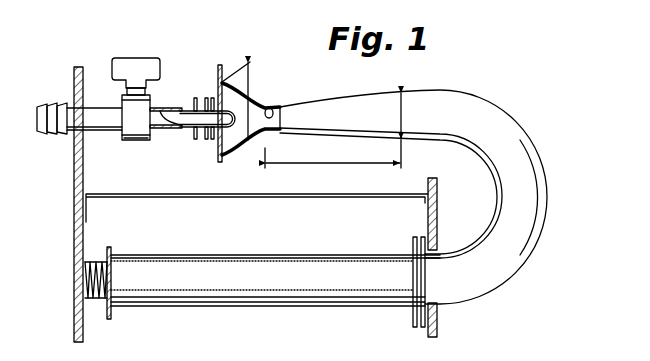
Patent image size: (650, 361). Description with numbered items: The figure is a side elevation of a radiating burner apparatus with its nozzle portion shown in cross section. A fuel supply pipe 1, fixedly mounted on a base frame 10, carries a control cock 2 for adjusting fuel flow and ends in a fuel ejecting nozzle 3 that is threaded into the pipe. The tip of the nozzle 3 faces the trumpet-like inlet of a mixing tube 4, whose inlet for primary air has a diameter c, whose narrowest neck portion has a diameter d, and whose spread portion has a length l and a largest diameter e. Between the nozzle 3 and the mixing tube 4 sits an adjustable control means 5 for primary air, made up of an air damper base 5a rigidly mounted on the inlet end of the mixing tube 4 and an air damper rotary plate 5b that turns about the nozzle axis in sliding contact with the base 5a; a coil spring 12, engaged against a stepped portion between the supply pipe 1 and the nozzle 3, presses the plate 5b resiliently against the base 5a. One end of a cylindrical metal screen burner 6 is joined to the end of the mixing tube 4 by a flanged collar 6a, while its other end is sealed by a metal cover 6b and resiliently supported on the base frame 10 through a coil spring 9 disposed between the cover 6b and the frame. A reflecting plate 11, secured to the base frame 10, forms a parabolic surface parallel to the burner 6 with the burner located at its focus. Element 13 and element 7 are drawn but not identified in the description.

The fuel supply pipe 1 is at (99, 114).
The control cock 2 is at (133, 63).
The fuel ejecting nozzle 3 is at (186, 132).
The trumpet-like mixing tube 4 is at (499, 114).
The adjustable control means 5 is at (220, 92).
The air damper base 5a is at (228, 82).
The air damper rotary plate 5b is at (218, 70).
The cylindrical metal screen burner 6 is at (240, 307).
The flanged collar 6a is at (414, 310).
The metal cover 6b is at (112, 320).
The mounting plate 7 is at (422, 326).
The coil spring 9 is at (93, 300).
The base frame 10 is at (80, 320).
The reflecting plate 11 is at (243, 197).
The coil spring 12 is at (208, 140).
The nozzle 13 is at (192, 122).
The primary air inlet diameter c is at (236, 101).
The narrowest neck portion diameter d is at (276, 106).
The largest diameter of spread portion e is at (396, 116).
The length of spread portion l is at (333, 158).